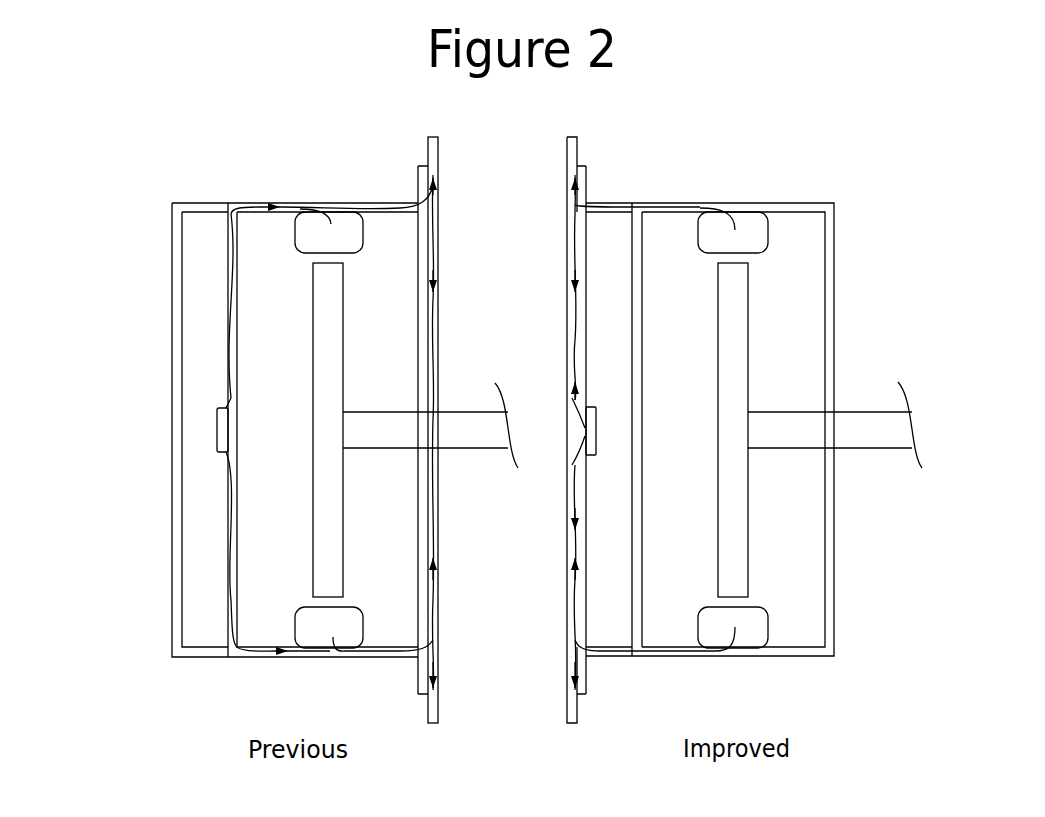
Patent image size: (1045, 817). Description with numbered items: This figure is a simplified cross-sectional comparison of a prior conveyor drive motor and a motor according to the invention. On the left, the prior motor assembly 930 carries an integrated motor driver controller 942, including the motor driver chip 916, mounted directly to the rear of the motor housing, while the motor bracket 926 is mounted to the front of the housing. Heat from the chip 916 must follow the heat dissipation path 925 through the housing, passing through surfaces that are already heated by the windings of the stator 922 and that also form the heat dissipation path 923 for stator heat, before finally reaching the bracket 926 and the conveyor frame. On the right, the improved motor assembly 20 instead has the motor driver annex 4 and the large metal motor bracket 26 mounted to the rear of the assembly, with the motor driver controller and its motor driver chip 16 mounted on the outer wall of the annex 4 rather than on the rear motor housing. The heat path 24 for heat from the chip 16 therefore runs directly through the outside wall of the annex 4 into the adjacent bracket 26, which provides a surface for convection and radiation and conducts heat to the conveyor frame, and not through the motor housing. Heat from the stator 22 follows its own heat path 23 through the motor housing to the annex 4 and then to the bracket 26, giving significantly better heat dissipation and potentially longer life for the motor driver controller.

The motor assembly 930 is at (278, 185).
The integrated motor driver controller 942 is at (225, 285).
The motor driver chip 916 is at (215, 422).
The heat dissipation path 925 is at (227, 567).
The stator 922 is at (310, 227).
The motor bracket 926 is at (440, 162).
The heat dissipation path 923 is at (383, 655).
The improved motor assembly 20 is at (793, 200).
The motor bracket 26 is at (580, 147).
The motor winding 22 is at (713, 228).
The motor driver annex 4 is at (580, 313).
The motor driver chip 16 is at (580, 425).
The heat path 24 is at (568, 476).
The heat path 23 is at (678, 655).